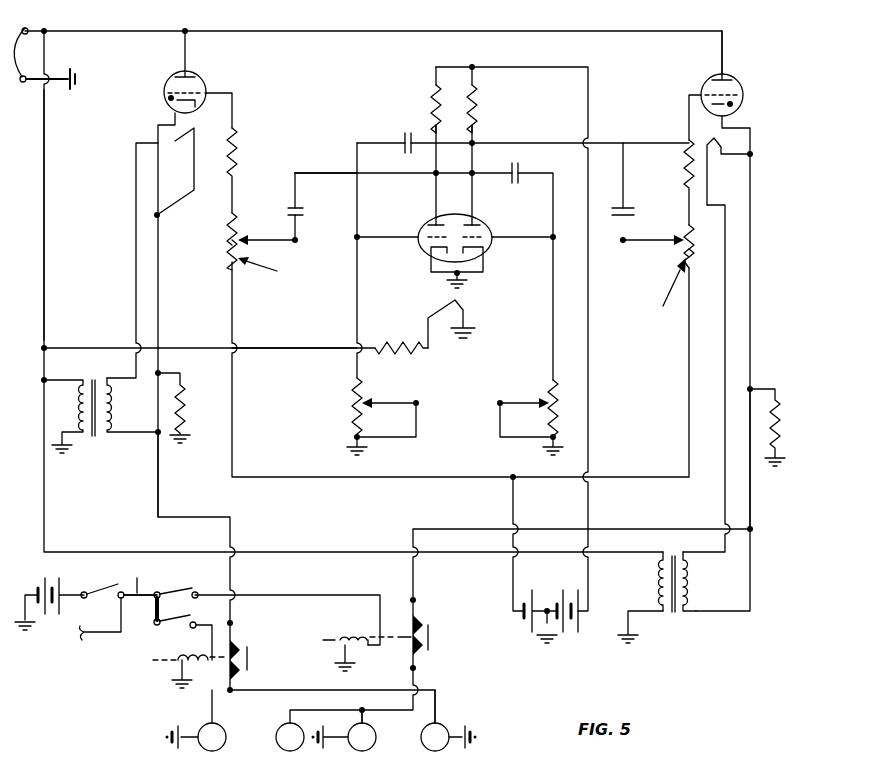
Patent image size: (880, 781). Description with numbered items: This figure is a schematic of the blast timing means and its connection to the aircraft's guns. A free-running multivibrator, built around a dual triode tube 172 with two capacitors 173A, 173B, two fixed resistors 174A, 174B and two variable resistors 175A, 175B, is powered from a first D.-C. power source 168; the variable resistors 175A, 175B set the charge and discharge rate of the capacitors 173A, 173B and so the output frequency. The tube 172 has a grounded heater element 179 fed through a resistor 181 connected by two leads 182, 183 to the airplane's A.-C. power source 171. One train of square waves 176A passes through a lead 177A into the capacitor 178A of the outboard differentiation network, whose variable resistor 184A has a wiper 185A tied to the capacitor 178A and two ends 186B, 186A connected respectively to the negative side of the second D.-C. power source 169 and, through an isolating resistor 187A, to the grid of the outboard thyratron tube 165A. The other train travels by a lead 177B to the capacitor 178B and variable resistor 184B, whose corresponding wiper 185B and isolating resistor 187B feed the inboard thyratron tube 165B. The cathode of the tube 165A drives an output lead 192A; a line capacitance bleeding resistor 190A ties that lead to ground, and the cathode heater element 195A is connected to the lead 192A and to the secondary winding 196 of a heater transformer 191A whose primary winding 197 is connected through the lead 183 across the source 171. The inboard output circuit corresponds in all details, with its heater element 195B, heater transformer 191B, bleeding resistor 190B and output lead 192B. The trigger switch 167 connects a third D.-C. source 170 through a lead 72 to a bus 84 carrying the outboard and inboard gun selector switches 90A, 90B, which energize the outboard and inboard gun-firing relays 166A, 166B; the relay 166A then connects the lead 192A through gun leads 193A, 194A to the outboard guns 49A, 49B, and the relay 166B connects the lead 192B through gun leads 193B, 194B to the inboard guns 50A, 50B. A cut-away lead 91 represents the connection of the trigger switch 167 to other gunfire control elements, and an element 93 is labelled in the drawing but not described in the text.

The A.-C. power source 171 is at (35, 42).
The thyratron tube 165A is at (168, 80).
The thyratron tube 165B is at (742, 88).
The isolating resistor 187A is at (234, 157).
The isolating resistor 187B is at (685, 154).
The cathode heater element 195A is at (208, 128).
The heater connection 195B is at (719, 155).
The end of variable resistor 186A is at (229, 216).
The end of variable resistor 186B is at (230, 265).
The wiper 185A is at (273, 238).
The tap contact 185B is at (680, 242).
The variable resistor 184A is at (280, 270).
The variable resistor 184B is at (659, 289).
The capacitor 178A is at (307, 202).
The capacitor 178B is at (606, 258).
The electrical lead 177A is at (327, 172).
The lead 177B is at (623, 145).
The fixed resistor 174A is at (434, 100).
The fixed resistor 174B is at (476, 121).
The capacitor 173A is at (422, 133).
The capacitor 173B is at (510, 178).
The dual triode tube 172 is at (486, 252).
The heater element 179 is at (465, 305).
The resistor 181 is at (390, 353).
The lead 182 is at (340, 347).
The lead 183 is at (47, 271).
The variable resistor 175A is at (354, 413).
The variable resistor 175B is at (550, 383).
The primary winding 197 is at (72, 392).
The secondary winding 196 is at (113, 405).
The cathode heater transformer 191A is at (94, 439).
The line capacitance bleeding resistor 190A is at (184, 397).
The capacitance-bleeding resistor 190B is at (780, 413).
The output lead 192A is at (160, 464).
The output lead 192B is at (748, 527).
The third source of D.-C. power 170 is at (57, 616).
The trigger switch 167 is at (107, 582).
The lead 72 is at (140, 577).
The inboard gun selector switch 90B is at (170, 590).
The lead 91 is at (95, 640).
The bus 84 is at (152, 605).
The outboard gun selector switch 90A is at (159, 628).
The outboard gun-firing relay 166A is at (249, 658).
The inboard gun-firing relay 166B is at (431, 634).
The second D.-C. power source 169 is at (533, 596).
The first D.-C. power source 168 is at (577, 623).
The heater transformer 191B is at (677, 613).
The gun lead 193A is at (208, 711).
The gun lead 193B is at (290, 725).
The gun lead 194A is at (437, 709).
The gun lead 194B is at (363, 713).
The outboard gun 49A is at (225, 727).
The outboard gun 49B is at (448, 729).
The inboard gun 50A is at (299, 748).
The inboard gun 50B is at (374, 741).
The indicator 93 is at (182, 772).
The train of square waves 176A is at (59, 775).